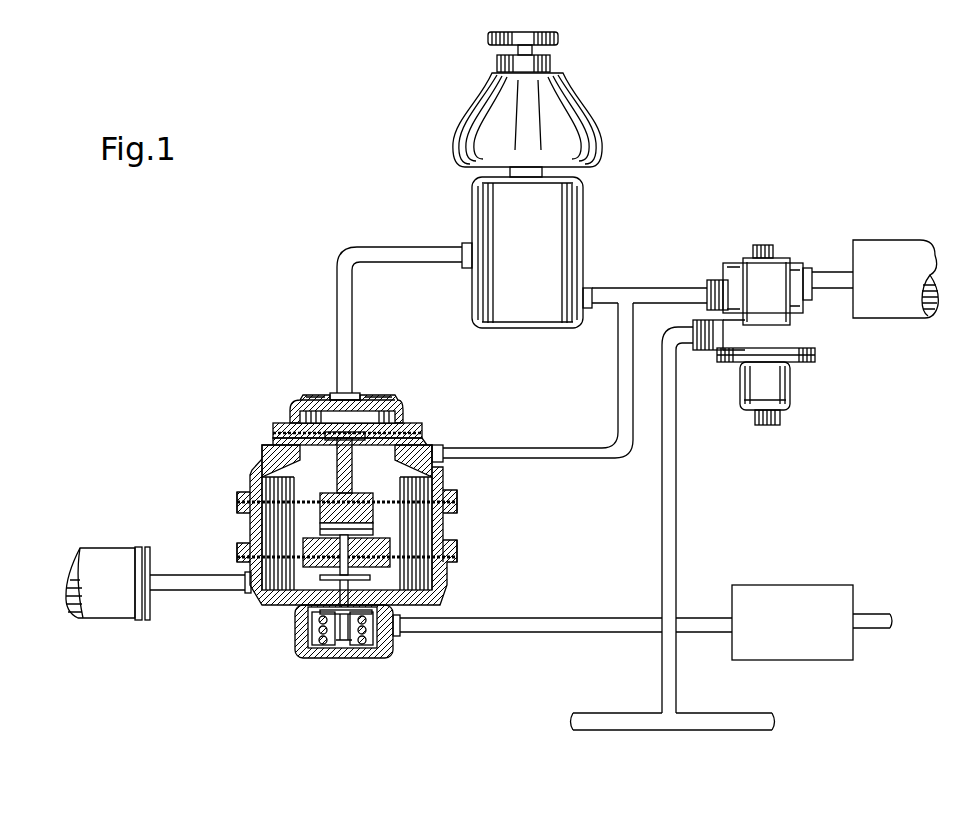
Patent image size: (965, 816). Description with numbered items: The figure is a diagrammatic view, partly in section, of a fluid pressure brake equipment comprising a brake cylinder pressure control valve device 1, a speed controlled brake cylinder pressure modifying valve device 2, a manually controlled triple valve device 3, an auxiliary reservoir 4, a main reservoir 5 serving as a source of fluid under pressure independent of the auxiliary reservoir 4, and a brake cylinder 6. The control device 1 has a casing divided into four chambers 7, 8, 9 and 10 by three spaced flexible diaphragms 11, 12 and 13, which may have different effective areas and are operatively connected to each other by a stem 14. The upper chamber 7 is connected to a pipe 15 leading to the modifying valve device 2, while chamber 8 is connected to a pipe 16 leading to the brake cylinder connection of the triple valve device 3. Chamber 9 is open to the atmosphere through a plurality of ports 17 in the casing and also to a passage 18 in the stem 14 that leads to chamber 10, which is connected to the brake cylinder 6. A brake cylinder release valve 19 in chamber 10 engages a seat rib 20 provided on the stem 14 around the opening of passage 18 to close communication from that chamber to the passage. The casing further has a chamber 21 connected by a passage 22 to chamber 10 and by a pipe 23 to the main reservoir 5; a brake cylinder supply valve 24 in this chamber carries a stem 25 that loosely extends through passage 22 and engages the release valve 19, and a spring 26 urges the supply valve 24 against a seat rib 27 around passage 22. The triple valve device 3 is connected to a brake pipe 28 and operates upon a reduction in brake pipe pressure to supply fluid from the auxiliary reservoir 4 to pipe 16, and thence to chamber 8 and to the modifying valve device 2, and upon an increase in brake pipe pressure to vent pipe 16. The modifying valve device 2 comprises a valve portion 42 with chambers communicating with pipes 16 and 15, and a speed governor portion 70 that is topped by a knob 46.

The brake cylinder pressure control valve device 1 is at (318, 396).
The speed controlled brake cylinder pressure modifying valve device 2 is at (468, 187).
The triple valve device 3 is at (790, 387).
The auxiliary reservoir 4 is at (893, 320).
The main reservoir 5 is at (810, 586).
The brake cylinder 6 is at (122, 549).
The upper chamber 7 is at (368, 405).
The chamber 8 is at (393, 462).
The chamber 9 is at (420, 515).
The chamber 10 is at (442, 580).
The flexible diaphragm 11 is at (398, 412).
The flexible diaphragm 12 is at (415, 495).
The flexible diaphragm 13 is at (420, 558).
The stem 14 is at (355, 488).
The pipe 15 is at (353, 299).
The pipe 16 is at (605, 452).
The ports 17 is at (245, 533).
The passage 18 is at (323, 530).
The brake cylinder release valve 19 is at (352, 586).
The seat rib 20 is at (333, 567).
The chamber 21 is at (305, 635).
The passage 22 is at (325, 602).
The pipe 23 is at (520, 636).
The brake cylinder supply valve 24 is at (392, 650).
The stem 25 is at (310, 615).
The spring 26 is at (310, 662).
The seat rib 27 is at (425, 601).
The brake pipe 28 is at (623, 715).
The valve portion 42 is at (471, 302).
The knob 46 is at (548, 32).
The speed governor portion 70 is at (592, 118).